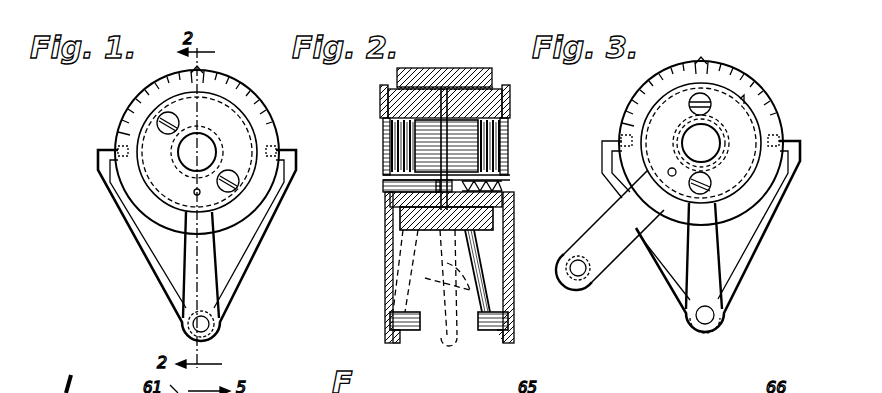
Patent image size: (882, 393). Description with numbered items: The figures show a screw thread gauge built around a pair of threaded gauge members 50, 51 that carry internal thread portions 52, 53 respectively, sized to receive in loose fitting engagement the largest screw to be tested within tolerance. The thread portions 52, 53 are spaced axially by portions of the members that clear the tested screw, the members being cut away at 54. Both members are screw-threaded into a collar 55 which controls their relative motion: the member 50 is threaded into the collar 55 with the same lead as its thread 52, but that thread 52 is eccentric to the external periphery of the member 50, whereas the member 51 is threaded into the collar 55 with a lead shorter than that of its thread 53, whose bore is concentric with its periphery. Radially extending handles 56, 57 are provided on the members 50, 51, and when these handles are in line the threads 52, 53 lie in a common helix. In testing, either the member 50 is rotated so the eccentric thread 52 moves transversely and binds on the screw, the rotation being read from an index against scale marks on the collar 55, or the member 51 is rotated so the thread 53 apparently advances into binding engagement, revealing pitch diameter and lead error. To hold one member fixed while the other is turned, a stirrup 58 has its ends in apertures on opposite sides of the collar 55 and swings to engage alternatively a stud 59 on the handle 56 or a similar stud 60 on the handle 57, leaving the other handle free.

In FIG. 1, the threaded gauge member 50 is at (183, 105).
In FIG. 2, the threaded gauge member 50 is at (396, 100).
In FIG. 3, the threaded gauge member 50 is at (663, 130).
In FIG. 2, the threaded gauge member 51 is at (490, 98).
In FIG. 1, the internal thread portion 52 is at (180, 152).
In FIG. 2, the internal thread portion 52 is at (400, 150).
In FIG. 2, the internal thread portion 53 is at (498, 152).
In FIG. 2, the cut away portion 54 is at (428, 138).
In FIG. 1, the collar 55 is at (135, 124).
In FIG. 2, the collar 55 is at (473, 70).
In FIG. 3, the collar 55 is at (736, 82).
In FIG. 1, the handle 56 is at (190, 267).
In FIG. 2, the handle 56 is at (388, 268).
In FIG. 3, the handle 56 is at (608, 232).
In FIG. 2, the handle 57 is at (510, 285).
In FIG. 3, the handle 57 is at (711, 259).
In FIG. 1, the stirrup 58 is at (135, 230).
In FIG. 2, the stirrup 58 is at (477, 268).
In FIG. 3, the stirrup 58 is at (760, 238).
In FIG. 1, the stud 59 is at (205, 324).
In FIG. 2, the stud 59 is at (410, 331).
In FIG. 3, the stud 59 is at (584, 272).
In FIG. 2, the stud 60 is at (490, 331).
In FIG. 3, the stud 60 is at (705, 318).